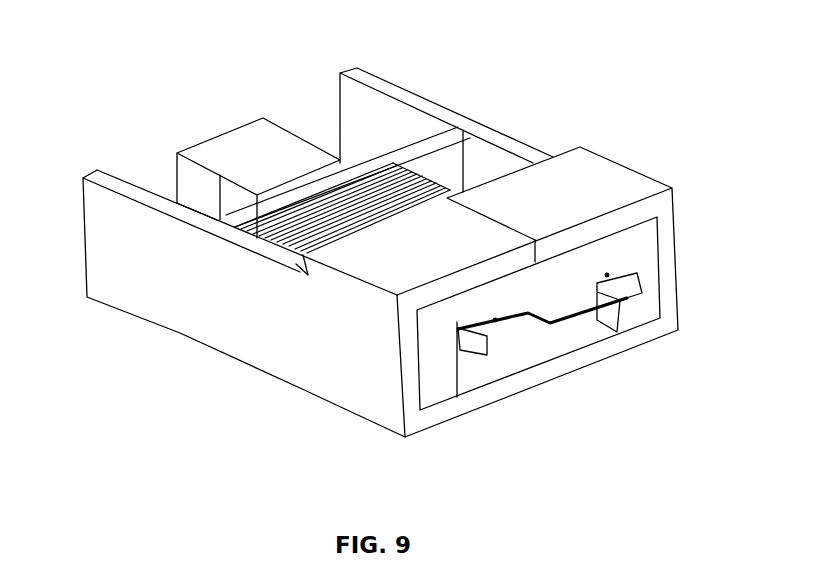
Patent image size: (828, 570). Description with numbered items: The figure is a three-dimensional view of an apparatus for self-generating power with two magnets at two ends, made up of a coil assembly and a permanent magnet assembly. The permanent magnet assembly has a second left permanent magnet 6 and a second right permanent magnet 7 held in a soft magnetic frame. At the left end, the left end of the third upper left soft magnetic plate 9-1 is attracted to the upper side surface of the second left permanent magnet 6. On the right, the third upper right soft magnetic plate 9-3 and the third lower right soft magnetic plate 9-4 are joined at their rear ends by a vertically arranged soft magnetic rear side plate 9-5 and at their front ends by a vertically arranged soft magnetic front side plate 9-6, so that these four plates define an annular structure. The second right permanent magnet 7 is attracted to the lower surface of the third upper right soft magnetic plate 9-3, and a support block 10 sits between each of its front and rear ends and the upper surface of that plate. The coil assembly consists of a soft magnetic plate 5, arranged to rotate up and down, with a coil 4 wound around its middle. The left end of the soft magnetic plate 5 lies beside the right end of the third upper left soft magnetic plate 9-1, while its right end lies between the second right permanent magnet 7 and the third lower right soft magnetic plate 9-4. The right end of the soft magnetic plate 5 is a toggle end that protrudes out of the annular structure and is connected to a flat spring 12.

The soft magnetic front side plate 9-6 is at (130, 220).
The second left permanent magnet 6 is at (190, 195).
The third upper left soft magnetic plate 9-1 is at (247, 160).
The soft magnetic rear side plate 9-5 is at (373, 120).
The soft magnetic plate 5 is at (315, 222).
The third upper right soft magnetic plate 9-3 is at (402, 250).
The third lower right soft magnetic plate 9-4 is at (520, 380).
The second right permanent magnet 7 is at (542, 273).
The support block 10 is at (447, 377).
The flat spring 12 is at (588, 288).
The coil 4 is at (637, 295).